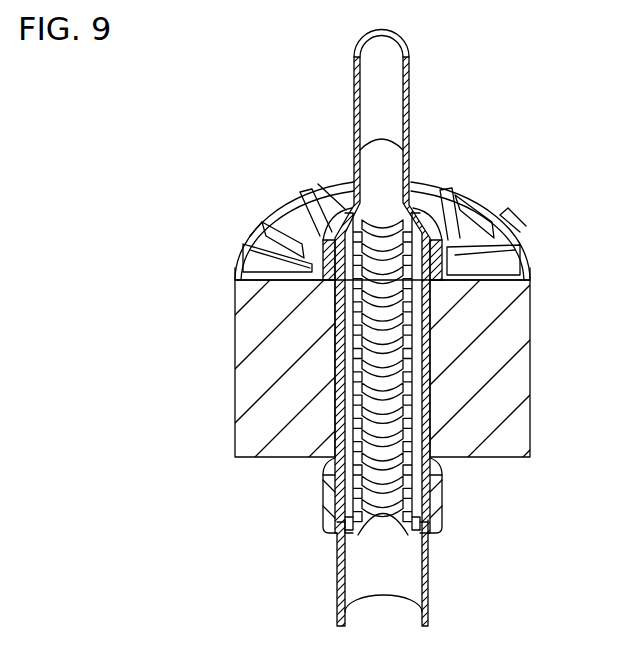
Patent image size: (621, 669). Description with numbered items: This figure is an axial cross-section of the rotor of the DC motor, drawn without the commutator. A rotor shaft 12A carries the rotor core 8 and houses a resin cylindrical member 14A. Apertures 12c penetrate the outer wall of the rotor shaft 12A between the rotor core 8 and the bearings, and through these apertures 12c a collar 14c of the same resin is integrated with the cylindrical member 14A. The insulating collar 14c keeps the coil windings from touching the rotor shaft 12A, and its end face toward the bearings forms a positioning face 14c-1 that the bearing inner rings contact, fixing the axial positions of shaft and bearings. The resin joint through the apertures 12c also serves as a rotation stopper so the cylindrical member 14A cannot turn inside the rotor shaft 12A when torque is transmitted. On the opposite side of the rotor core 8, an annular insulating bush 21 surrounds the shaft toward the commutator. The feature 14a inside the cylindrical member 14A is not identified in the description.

The bush 21 is at (466, 228).
The rotor core 8 is at (503, 333).
The thread portion 14a is at (398, 378).
The cylindrical member 14A is at (353, 360).
The apertures 12c is at (440, 492).
The collar 14c is at (443, 527).
The positioning face 14c-1 is at (330, 537).
The rotor shaft 12A is at (430, 573).